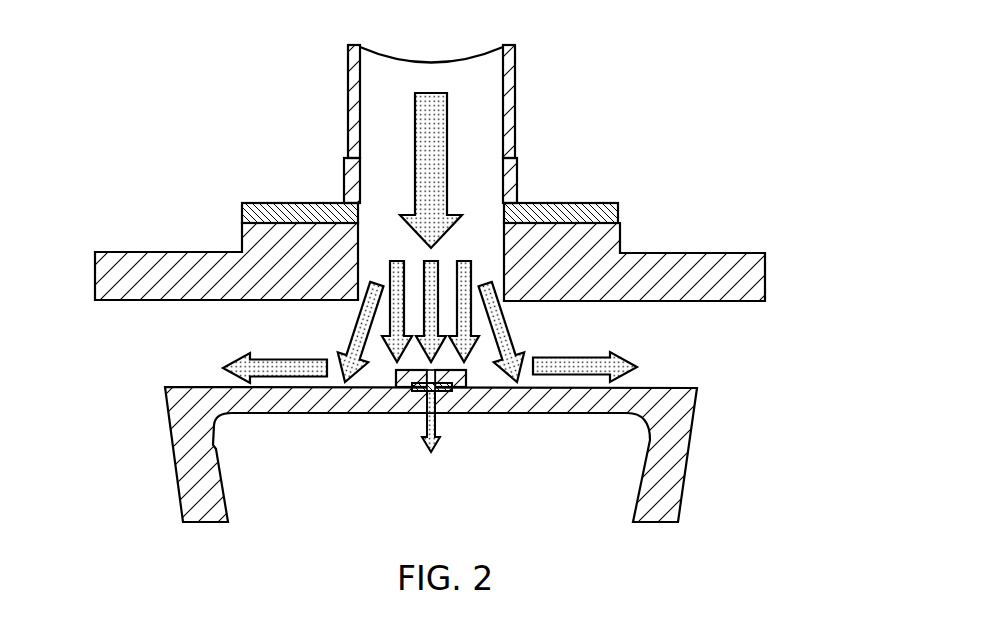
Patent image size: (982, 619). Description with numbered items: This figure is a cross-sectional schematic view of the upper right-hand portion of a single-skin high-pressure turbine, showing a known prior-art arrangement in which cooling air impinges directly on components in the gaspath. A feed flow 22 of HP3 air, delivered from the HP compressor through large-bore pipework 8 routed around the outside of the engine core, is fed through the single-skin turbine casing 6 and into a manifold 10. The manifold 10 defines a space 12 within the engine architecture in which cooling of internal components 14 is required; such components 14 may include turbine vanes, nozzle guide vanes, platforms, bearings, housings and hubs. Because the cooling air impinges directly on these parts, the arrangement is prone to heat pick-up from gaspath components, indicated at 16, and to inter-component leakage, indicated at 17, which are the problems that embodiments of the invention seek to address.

The turbine casing 6 is at (617, 211).
The pipework 8 is at (511, 104).
The manifold 10 is at (167, 272).
The space 12 is at (676, 331).
The internal components 14 is at (214, 420).
The heat pick-up 16 is at (290, 358).
The inter-component leakage 17 is at (440, 428).
The feed flow of HP3 air 22 is at (432, 120).